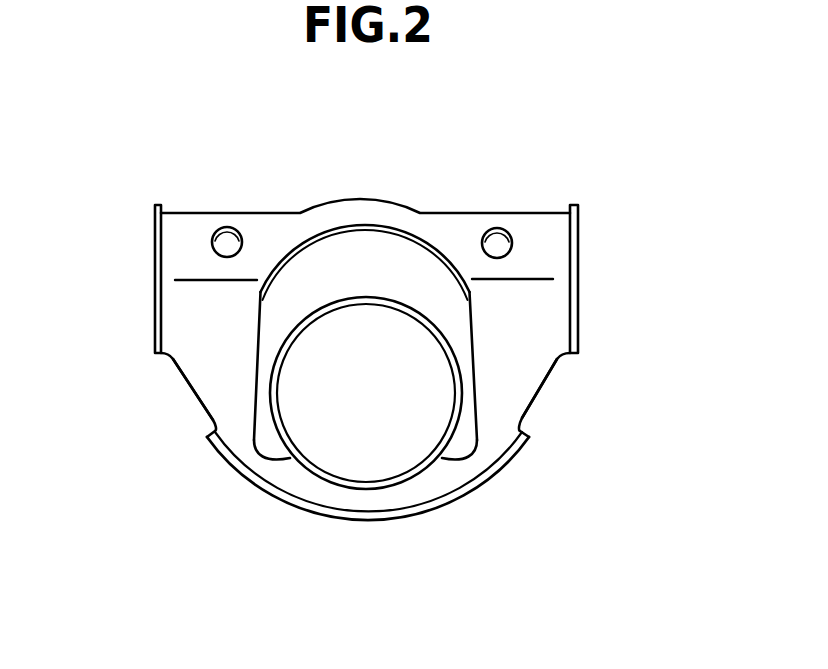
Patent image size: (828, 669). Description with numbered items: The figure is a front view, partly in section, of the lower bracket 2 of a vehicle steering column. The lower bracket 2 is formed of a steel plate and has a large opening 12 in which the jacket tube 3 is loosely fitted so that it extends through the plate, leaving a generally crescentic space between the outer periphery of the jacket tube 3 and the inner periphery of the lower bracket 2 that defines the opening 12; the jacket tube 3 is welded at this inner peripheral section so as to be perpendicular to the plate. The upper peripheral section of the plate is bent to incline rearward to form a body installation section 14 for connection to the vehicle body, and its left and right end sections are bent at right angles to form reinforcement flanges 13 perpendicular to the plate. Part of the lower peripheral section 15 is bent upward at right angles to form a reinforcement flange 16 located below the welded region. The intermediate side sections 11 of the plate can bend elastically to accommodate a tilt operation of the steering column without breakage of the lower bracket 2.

The lower bracket 2 is at (618, 354).
The jacket tube 3 is at (392, 297).
The intermediate side sections 11 is at (207, 370).
The large opening 12 is at (349, 231).
The reinforcement flanges 13 is at (155, 254).
The body installation section 14 is at (540, 232).
The lower peripheral section 15 is at (408, 495).
The reinforcement flange 16 is at (492, 473).